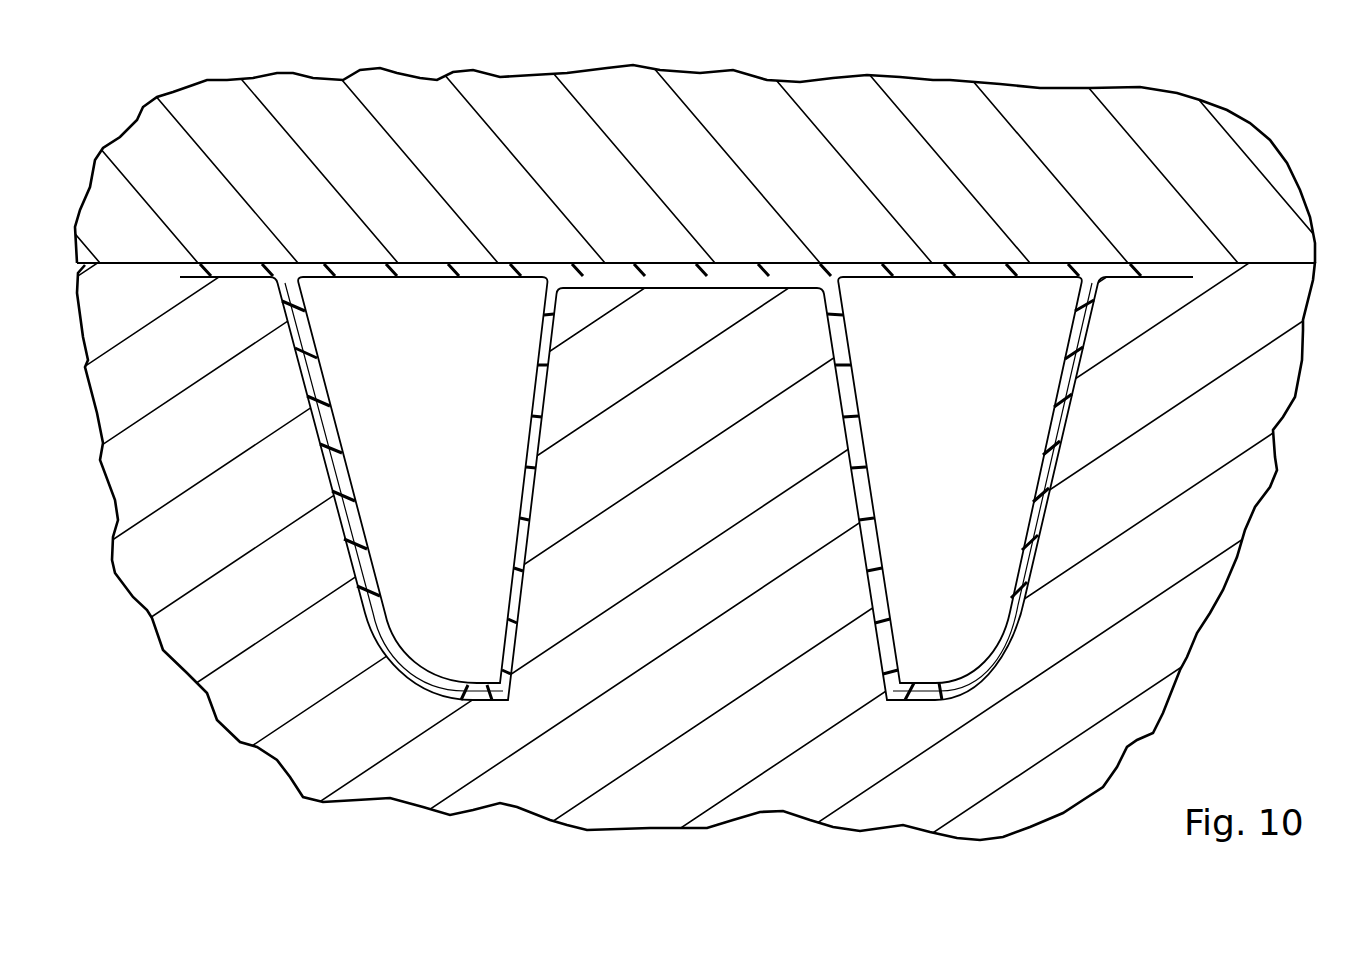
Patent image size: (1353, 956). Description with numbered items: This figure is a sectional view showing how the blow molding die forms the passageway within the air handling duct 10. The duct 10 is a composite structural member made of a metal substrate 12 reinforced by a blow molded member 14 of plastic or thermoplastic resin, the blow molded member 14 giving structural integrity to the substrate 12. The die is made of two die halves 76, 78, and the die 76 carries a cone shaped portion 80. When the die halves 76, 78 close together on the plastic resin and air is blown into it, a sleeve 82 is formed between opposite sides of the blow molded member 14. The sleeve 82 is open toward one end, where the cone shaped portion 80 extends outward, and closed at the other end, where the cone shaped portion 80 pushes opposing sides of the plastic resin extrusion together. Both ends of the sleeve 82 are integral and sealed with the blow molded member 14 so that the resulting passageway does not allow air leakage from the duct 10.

The composite structural fluid handling duct 10 is at (1062, 505).
The substrate 12 is at (217, 262).
The blow molded member 14 is at (525, 270).
The die half 76 is at (317, 742).
The die half 78 is at (307, 105).
The cone shaped portion 80 is at (600, 548).
The sleeve 82 is at (543, 397).